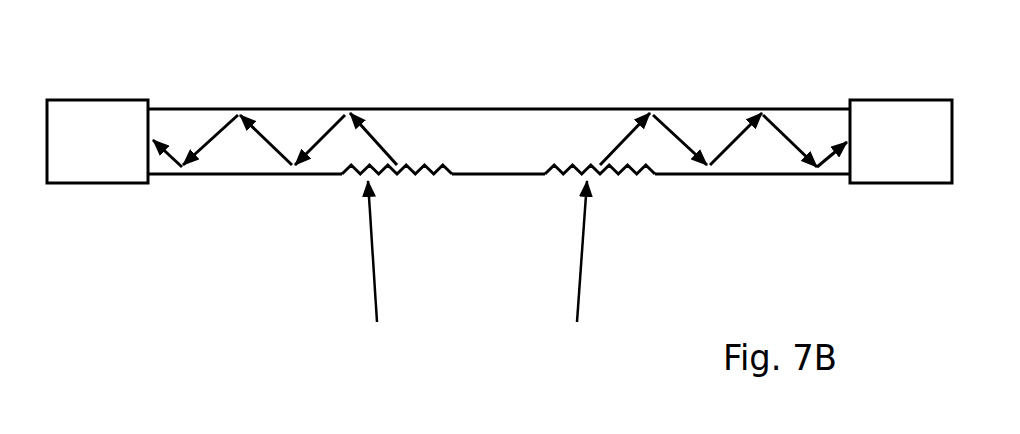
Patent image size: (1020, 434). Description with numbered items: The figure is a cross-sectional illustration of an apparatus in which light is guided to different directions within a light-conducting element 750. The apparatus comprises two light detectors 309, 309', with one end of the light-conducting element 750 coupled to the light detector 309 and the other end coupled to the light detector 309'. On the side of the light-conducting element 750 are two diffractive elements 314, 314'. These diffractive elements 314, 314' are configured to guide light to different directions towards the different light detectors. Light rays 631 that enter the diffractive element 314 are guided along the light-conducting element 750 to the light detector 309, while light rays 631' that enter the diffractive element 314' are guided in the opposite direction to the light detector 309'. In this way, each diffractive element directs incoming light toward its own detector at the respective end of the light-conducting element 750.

The light-conducting element 750 is at (577, 108).
The light detector 309' is at (97, 97).
The light detector 309 is at (901, 98).
The diffractive element 314' is at (397, 209).
The diffractive element 314 is at (582, 209).
The light rays 631' is at (314, 251).
The light rays 631 is at (639, 251).